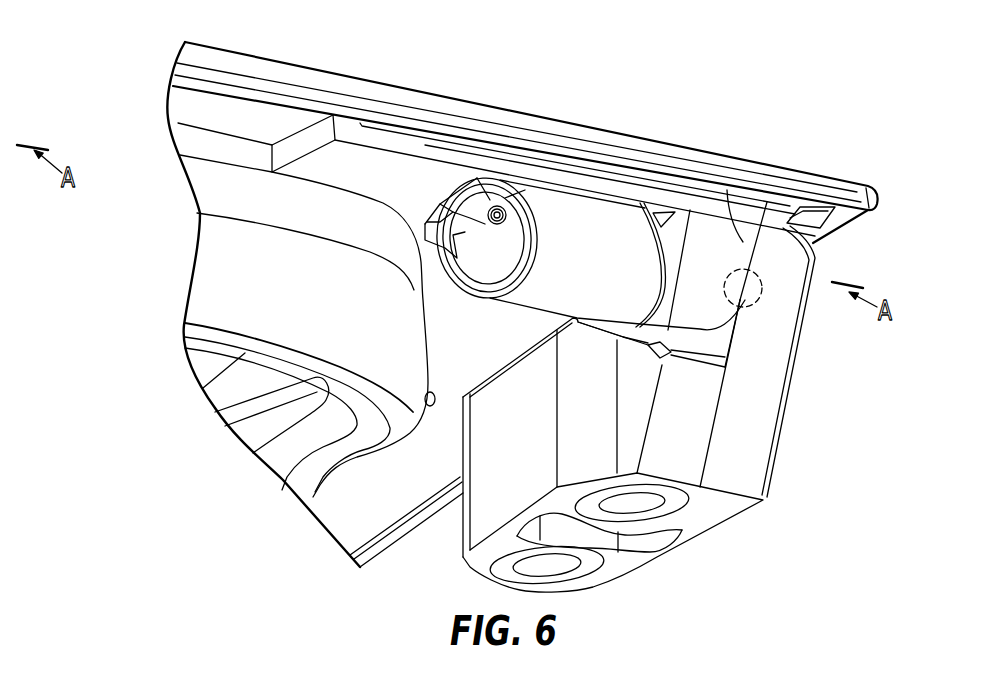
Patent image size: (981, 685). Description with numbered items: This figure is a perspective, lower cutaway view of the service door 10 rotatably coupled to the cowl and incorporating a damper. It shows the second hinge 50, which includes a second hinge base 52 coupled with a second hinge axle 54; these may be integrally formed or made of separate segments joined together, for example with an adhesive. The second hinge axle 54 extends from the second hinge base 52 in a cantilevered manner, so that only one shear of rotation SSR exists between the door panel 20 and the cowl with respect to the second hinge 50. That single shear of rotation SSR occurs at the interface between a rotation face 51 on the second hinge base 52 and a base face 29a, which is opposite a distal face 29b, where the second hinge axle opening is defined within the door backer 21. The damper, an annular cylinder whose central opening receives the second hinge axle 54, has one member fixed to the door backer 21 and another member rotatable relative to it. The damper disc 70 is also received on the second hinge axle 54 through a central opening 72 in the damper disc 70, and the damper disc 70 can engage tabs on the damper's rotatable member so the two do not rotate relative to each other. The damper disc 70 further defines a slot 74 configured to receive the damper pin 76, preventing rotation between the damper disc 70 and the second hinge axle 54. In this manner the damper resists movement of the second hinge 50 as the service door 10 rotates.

The service door 10 is at (135, 124).
The door panel 20 is at (387, 92).
The door backer 21 is at (297, 143).
The base face 29a is at (750, 243).
The distal face 29b is at (668, 235).
The second hinge 50 is at (688, 409).
The rotation face 51 is at (718, 338).
The second hinge base 52 is at (757, 453).
The second hinge axle 54 is at (433, 218).
The damper disc 70 is at (428, 320).
The central opening 72 is at (447, 263).
The slot 74 is at (520, 192).
The damper pin 76 is at (497, 208).
The shear of rotation SSR is at (763, 290).